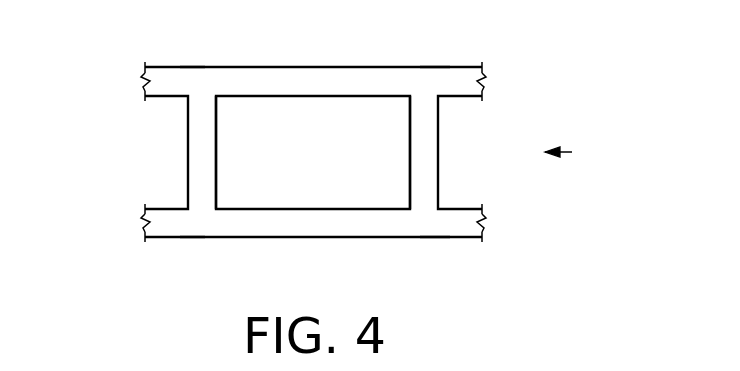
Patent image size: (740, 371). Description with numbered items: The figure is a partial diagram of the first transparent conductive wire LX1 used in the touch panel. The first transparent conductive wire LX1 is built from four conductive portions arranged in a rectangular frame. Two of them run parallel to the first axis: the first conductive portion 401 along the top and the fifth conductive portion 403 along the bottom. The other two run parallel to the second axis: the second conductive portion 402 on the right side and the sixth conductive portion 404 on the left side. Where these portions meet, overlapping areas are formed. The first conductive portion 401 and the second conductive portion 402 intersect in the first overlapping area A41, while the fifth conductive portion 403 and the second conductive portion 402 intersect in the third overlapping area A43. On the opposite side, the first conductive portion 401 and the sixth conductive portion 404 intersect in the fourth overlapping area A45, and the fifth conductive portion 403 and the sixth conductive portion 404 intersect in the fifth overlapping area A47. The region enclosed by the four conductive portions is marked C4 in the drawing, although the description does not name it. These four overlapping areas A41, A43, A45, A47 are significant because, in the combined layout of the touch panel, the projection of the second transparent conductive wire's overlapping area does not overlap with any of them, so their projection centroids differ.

The first conductive portion 401 is at (332, 76).
The second conductive portion 402 is at (432, 176).
The fifth conductive portion 403 is at (332, 230).
The sixth conductive portion 404 is at (196, 176).
The cavity C4 is at (336, 144).
The first overlapping area A41 is at (431, 74).
The third overlapping area A43 is at (431, 231).
The fourth overlapping area A45 is at (195, 74).
The fifth overlapping area A47 is at (194, 232).
The first transparent conductive wire LX1 is at (572, 152).